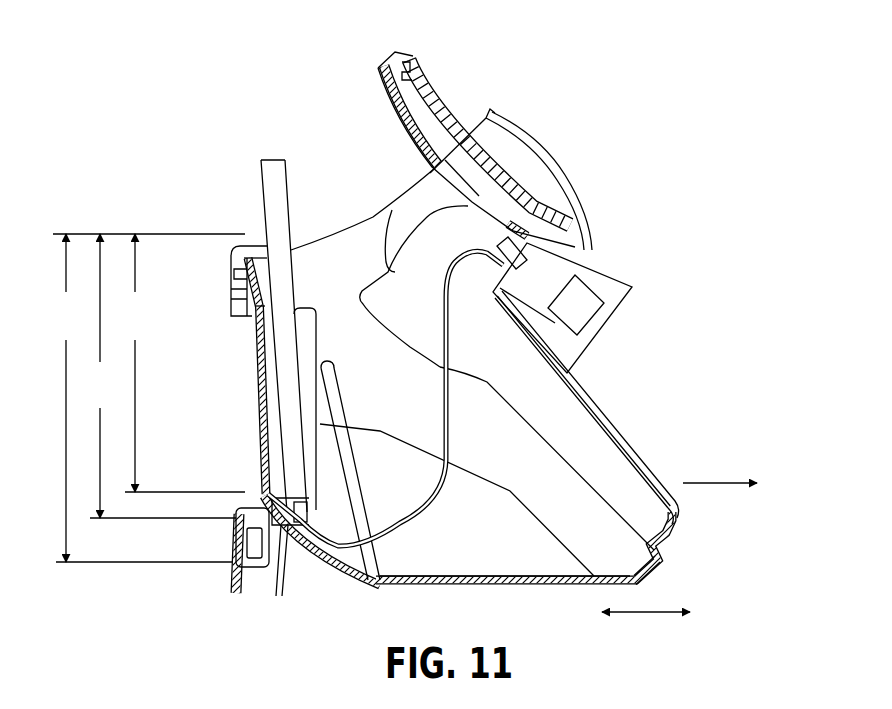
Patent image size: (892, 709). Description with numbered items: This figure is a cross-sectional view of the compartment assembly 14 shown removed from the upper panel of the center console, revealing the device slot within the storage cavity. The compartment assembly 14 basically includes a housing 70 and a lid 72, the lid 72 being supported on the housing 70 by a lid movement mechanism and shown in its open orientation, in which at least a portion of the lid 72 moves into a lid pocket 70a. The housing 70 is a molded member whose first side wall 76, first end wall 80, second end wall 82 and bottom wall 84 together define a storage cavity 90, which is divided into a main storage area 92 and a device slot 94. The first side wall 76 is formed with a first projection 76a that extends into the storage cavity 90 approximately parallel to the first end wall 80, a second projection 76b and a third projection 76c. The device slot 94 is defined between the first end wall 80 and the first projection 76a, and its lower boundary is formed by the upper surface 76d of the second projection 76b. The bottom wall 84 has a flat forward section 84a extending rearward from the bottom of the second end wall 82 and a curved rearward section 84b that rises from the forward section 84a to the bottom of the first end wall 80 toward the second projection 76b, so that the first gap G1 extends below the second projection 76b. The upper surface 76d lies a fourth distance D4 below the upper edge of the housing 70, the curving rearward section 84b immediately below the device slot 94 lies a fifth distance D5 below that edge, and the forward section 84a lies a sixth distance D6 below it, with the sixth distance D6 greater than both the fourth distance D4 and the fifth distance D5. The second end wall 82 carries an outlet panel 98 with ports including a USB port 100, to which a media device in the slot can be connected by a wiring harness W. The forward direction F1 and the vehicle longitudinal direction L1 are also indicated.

The compartment assembly 14 is at (720, 289).
The housing 70 is at (588, 404).
The lid pocket 70a is at (543, 167).
The lid 72 is at (428, 100).
The first side wall 76 is at (313, 272).
The first projection 76a is at (327, 400).
The second projection 76b is at (279, 588).
The third projection 76c is at (273, 361).
The upper surface 76d is at (208, 395).
The first end wall 80 is at (263, 398).
The second end wall 82 is at (620, 446).
The bottom wall 84 is at (411, 571).
The forward section 84a is at (503, 576).
The rearward section 84b is at (320, 555).
The storage cavity 90 is at (363, 250).
The main storage area 92 is at (546, 556).
The device slot 94 is at (268, 437).
The outlet panel 98 is at (494, 280).
The USB port 100 is at (553, 283).
The wiring harness W is at (457, 400).
The first gap G1 is at (314, 507).
The forward direction F1 is at (713, 482).
The vehicle longitudinal direction L1 is at (647, 613).
The fourth distance D4 is at (183, 363).
The fifth distance D5 is at (161, 376).
The sixth distance D6 is at (148, 398).